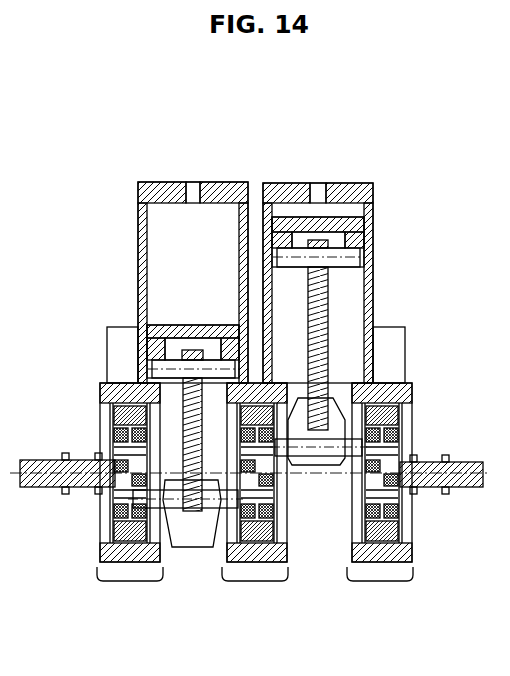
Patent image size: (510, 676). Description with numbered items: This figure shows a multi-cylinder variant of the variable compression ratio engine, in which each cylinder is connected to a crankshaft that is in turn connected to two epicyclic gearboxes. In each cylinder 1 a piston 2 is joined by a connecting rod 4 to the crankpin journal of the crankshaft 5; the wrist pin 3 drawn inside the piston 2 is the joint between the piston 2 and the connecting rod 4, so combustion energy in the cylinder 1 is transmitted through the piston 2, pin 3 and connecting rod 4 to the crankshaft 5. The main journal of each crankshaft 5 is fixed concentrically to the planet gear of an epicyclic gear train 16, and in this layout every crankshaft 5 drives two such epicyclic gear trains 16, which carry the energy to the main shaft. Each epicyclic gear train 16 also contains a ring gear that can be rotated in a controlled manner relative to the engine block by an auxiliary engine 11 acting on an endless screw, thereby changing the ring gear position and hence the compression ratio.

The cylinder 1 is at (138, 185).
The piston 2 is at (163, 337).
The wrist pin 3 is at (158, 360).
The connecting rod 4 is at (183, 402).
The crankshaft 5 is at (178, 548).
The auxiliary engine 11 is at (253, 353).
The epicyclic gear train 16 is at (255, 505).